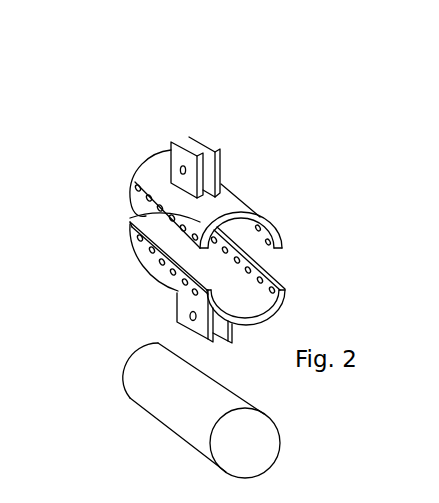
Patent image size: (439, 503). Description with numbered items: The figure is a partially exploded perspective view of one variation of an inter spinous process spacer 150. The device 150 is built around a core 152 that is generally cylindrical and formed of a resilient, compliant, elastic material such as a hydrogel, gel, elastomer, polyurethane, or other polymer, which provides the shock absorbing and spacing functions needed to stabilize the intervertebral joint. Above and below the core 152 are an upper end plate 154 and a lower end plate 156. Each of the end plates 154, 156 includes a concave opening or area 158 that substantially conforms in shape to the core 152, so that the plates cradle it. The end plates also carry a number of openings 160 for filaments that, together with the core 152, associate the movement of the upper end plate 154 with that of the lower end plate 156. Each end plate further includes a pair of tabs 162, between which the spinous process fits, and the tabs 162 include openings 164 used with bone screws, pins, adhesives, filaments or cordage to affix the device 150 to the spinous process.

The inter spinous process spacer 150 is at (99, 291).
The core 152 is at (263, 447).
The upper end plate 154 is at (240, 201).
The lower end plate 156 is at (291, 307).
The concave opening 158 is at (217, 270).
The openings 160 is at (136, 239).
The tabs 162 is at (171, 144).
The openings 164 is at (181, 170).